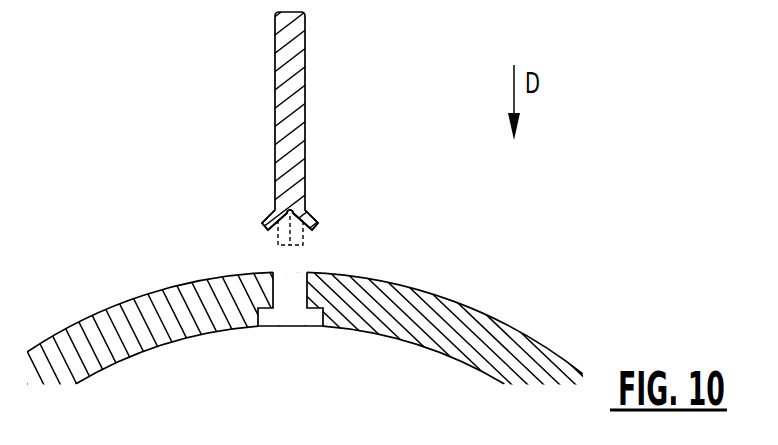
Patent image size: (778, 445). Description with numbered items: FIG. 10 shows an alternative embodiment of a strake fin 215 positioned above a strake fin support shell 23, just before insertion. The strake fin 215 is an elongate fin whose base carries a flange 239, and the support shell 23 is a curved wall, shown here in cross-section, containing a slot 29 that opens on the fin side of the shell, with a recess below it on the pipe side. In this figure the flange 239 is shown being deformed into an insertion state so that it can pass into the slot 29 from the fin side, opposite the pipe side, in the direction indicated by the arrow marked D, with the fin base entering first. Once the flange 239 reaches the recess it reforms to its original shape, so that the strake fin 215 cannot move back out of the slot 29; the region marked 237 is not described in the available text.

The strake fin 215 is at (243, 102).
The strake fin support shell 23 is at (323, 83).
The flange 239 is at (340, 207).
The engagement region 237 is at (235, 238).
The slot 29 is at (293, 292).